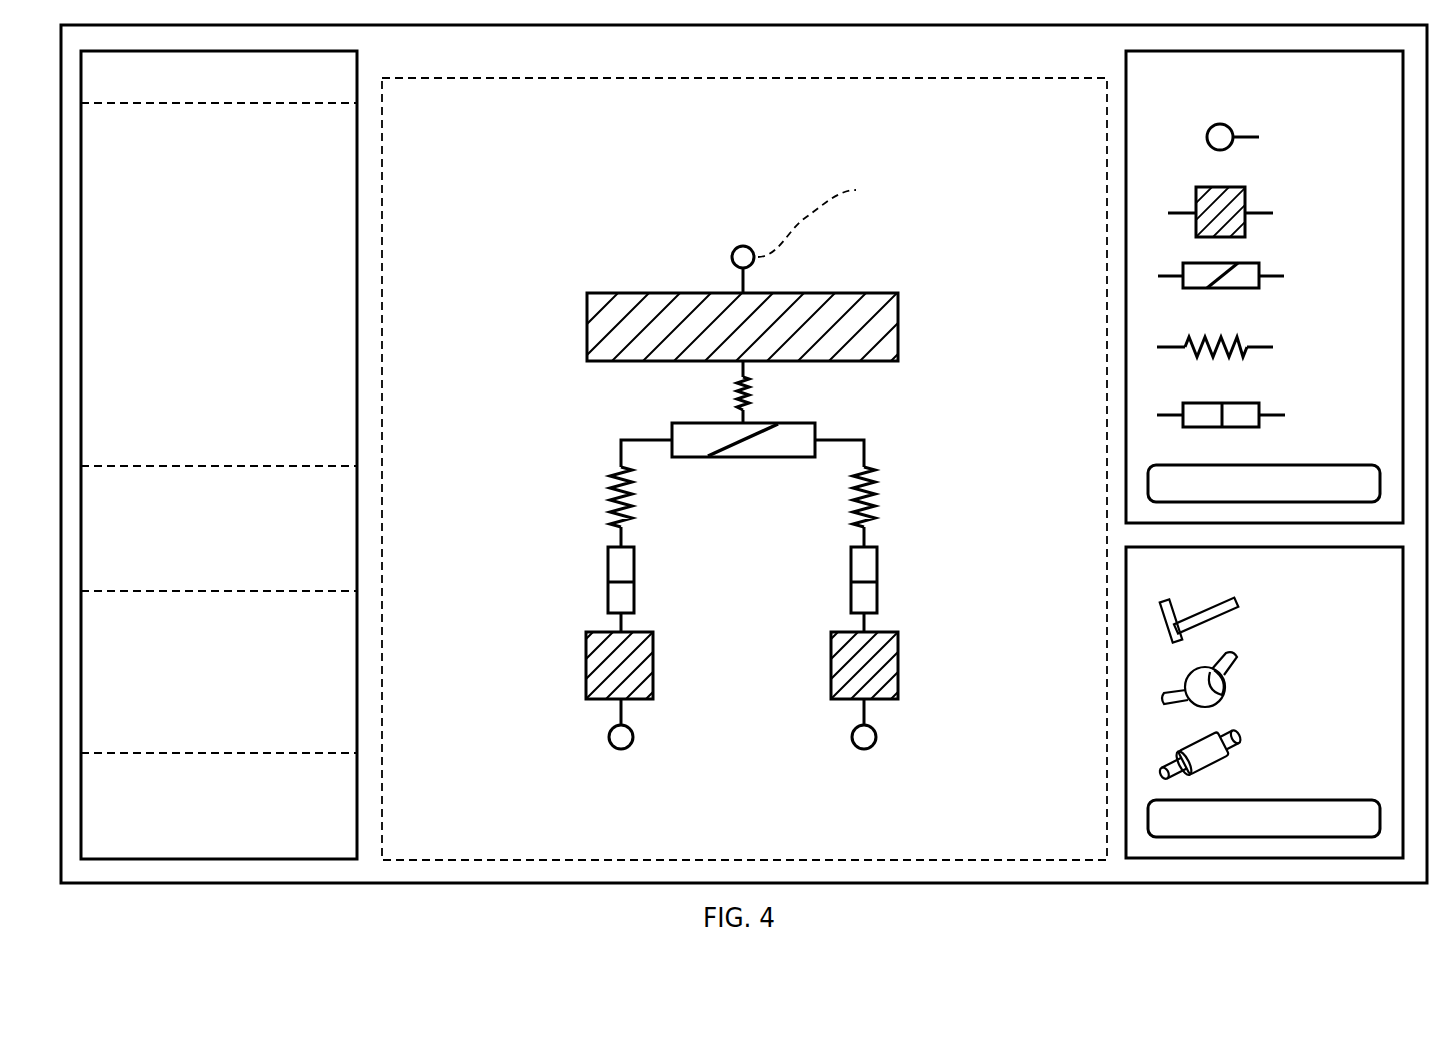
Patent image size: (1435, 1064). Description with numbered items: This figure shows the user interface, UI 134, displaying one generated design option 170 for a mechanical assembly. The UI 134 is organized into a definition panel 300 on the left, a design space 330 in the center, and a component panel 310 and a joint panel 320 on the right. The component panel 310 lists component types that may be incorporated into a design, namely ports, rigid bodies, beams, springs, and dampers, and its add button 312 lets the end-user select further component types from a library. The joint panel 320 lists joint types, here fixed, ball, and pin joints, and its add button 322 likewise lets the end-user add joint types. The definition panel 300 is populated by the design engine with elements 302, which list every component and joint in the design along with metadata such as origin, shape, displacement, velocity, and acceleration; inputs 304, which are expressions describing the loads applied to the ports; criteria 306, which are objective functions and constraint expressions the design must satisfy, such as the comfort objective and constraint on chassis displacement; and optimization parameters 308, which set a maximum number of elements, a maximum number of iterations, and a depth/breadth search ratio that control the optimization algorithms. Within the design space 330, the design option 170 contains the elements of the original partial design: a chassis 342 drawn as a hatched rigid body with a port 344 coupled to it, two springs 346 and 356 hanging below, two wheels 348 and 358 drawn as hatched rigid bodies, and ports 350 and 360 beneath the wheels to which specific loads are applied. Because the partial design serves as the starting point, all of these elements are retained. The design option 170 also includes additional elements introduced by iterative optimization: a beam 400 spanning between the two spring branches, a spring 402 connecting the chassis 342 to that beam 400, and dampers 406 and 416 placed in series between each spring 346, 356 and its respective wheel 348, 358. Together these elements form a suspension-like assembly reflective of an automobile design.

The user interface 134 is at (761, 66).
The definition panel 300 is at (302, 89).
The elements 302 is at (202, 125).
The inputs 304 is at (175, 498).
The criteria 306 is at (184, 620).
The optimization parameters 308 is at (319, 781).
The component panel 310 is at (1384, 89).
The add button 312 is at (1310, 465).
The joint panel 320 is at (1346, 587).
The add button 322 is at (1310, 800).
The design space 330 is at (1094, 116).
The design option 170 is at (538, 162).
The chassis 342 is at (587, 293).
The port 344 is at (740, 246).
The spring 346 is at (615, 468).
The wheel 348 is at (613, 632).
The port 350 is at (620, 752).
The spring 356 is at (870, 468).
The wheel 358 is at (877, 632).
The port 360 is at (867, 752).
The beam 400 is at (708, 422).
The spring 402 is at (745, 412).
The damper 406 is at (612, 548).
The damper 416 is at (877, 548).